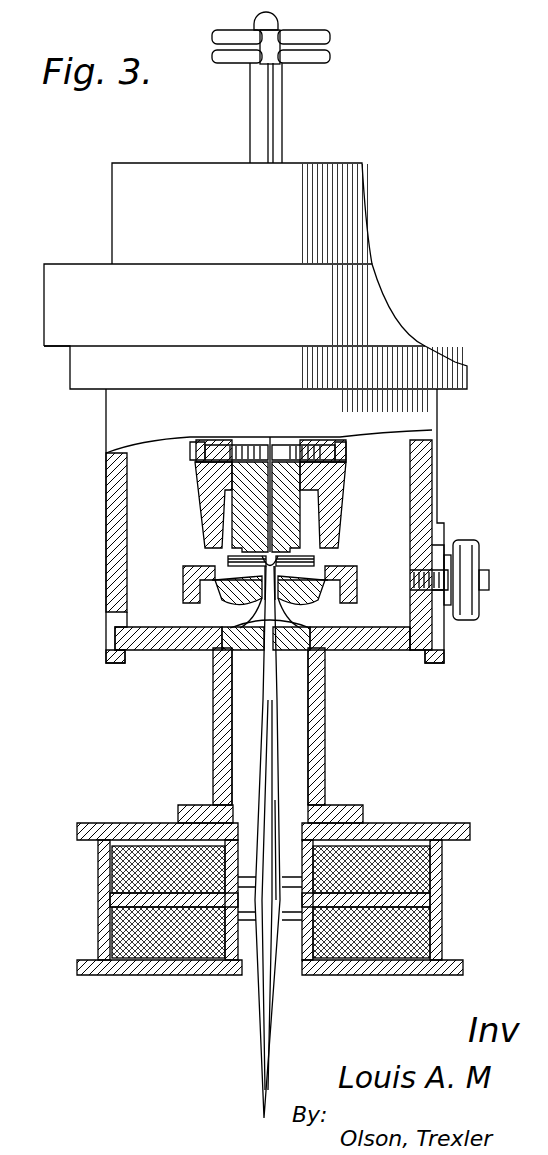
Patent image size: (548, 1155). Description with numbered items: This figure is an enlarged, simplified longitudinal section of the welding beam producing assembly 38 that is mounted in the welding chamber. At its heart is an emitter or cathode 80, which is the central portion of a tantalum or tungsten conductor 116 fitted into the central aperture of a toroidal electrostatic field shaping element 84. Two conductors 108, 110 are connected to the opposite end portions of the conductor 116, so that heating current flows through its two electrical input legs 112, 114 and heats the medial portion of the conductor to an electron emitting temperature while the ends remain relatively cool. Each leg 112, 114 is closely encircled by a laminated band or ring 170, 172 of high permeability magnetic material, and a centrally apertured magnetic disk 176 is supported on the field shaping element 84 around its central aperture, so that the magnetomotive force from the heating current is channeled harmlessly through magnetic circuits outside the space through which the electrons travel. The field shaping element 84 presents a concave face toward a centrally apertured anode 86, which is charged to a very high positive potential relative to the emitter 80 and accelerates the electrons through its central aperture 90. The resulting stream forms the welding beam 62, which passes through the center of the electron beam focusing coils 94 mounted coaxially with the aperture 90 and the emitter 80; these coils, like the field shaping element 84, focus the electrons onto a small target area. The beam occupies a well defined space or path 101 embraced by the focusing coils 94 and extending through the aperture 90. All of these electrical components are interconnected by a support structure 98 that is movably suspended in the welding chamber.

The welding beam producing assembly 38 is at (440, 510).
The welding beam 62 is at (272, 1020).
The emitter or cathode 80 is at (262, 604).
The field shaping element 84 is at (284, 566).
The anode 86 is at (300, 650).
The central aperture 90 is at (258, 648).
The electron beam focusing coils 94 is at (110, 908).
The support structure 98 is at (106, 648).
The beam space or path 101 is at (272, 642).
The conductor 108 is at (208, 506).
The conductor 110 is at (322, 508).
The electrical input end or leg 112 is at (185, 572).
The electrical input end or leg 114 is at (352, 583).
The conductor 116 is at (220, 600).
The band or ring 170 is at (230, 558).
The band or ring 172 is at (310, 556).
The magnetic disk 176 is at (292, 600).